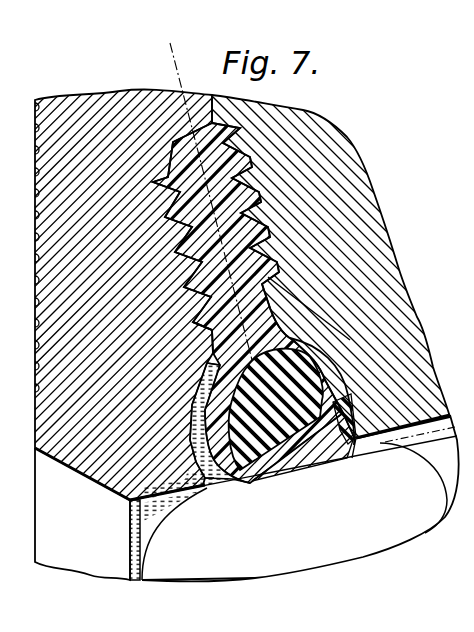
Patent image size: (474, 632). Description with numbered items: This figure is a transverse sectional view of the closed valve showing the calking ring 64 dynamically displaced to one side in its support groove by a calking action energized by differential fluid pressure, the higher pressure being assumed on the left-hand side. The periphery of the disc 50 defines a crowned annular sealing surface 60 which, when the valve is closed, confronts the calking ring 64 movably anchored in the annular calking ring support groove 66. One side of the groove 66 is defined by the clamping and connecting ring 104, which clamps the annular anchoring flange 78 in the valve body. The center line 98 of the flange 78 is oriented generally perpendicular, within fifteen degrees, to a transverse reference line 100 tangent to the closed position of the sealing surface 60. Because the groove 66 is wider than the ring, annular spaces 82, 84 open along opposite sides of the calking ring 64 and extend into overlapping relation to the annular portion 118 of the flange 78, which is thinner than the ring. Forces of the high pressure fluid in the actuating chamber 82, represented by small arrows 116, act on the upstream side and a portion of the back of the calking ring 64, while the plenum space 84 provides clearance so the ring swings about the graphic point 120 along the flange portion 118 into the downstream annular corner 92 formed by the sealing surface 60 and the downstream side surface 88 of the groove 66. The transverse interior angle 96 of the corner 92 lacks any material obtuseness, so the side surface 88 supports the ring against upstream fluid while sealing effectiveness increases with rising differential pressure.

The disc 50 is at (250, 565).
The annular sealing surface 60 is at (380, 446).
The calking ring 64 is at (251, 480).
The calking ring support groove 66 is at (334, 376).
The anchoring flange 78 is at (244, 134).
The annular space 82 is at (192, 402).
The annular space 84 is at (318, 362).
The side surface 88 is at (340, 404).
The annular calking corner 92 is at (353, 447).
The transverse interior angle 96 is at (297, 462).
The center line 98 is at (168, 57).
The transverse reference line 100 is at (153, 506).
The clamping and connecting ring 104 is at (70, 107).
The arrows 116 is at (197, 378).
The annular portion of the flange 118 is at (296, 314).
The graphic point 120 is at (250, 340).